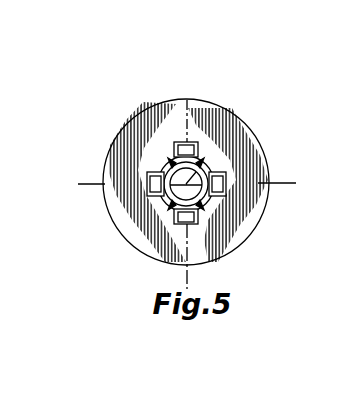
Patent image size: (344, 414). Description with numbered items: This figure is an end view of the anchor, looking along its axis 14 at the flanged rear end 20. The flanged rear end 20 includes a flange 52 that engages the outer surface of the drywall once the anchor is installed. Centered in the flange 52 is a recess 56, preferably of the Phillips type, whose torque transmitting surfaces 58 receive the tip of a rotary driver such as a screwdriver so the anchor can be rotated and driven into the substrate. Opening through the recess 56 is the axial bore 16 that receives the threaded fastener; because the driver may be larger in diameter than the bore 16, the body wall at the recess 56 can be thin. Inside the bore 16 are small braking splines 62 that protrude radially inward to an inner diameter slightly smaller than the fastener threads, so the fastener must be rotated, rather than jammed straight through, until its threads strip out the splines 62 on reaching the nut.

The flanged rear end 20 is at (214, 90).
The axis 14 is at (196, 162).
The axial bore 16 is at (198, 223).
The flange 52 is at (132, 143).
The recess 56 is at (167, 213).
The torque transmitting surfaces 58 is at (185, 142).
The braking splines 62 is at (203, 208).